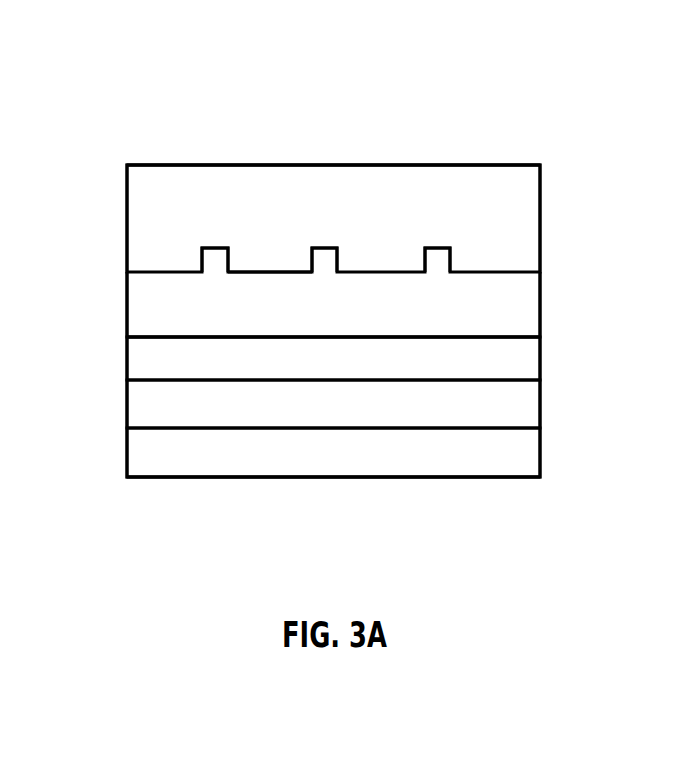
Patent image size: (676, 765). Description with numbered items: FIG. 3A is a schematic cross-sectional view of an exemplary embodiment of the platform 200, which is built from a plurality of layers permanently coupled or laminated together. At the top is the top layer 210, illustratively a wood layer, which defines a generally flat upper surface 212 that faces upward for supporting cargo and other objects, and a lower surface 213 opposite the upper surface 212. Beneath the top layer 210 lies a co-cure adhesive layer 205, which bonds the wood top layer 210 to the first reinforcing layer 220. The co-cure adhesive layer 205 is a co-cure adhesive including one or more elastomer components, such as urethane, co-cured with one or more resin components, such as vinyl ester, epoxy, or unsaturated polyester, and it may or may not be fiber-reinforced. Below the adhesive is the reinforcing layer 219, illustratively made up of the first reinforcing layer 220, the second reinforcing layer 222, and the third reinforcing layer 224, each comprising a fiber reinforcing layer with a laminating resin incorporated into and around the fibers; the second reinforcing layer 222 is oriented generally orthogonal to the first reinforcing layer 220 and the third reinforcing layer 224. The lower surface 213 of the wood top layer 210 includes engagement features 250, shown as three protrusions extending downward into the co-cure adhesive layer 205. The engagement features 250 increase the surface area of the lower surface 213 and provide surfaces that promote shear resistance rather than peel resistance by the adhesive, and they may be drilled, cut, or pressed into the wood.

The platform 200 is at (577, 165).
The co-cure adhesive layer 205 is at (333, 304).
The top layer 210 is at (333, 218).
The upper surface 212 is at (398, 165).
The lower surface 213 is at (258, 275).
The reinforcing layer 219 is at (110, 338).
The first reinforcing layer 220 is at (333, 358).
The second reinforcing layer 222 is at (333, 404).
The third reinforcing layer 224 is at (333, 452).
The engagement feature 250 is at (451, 235).